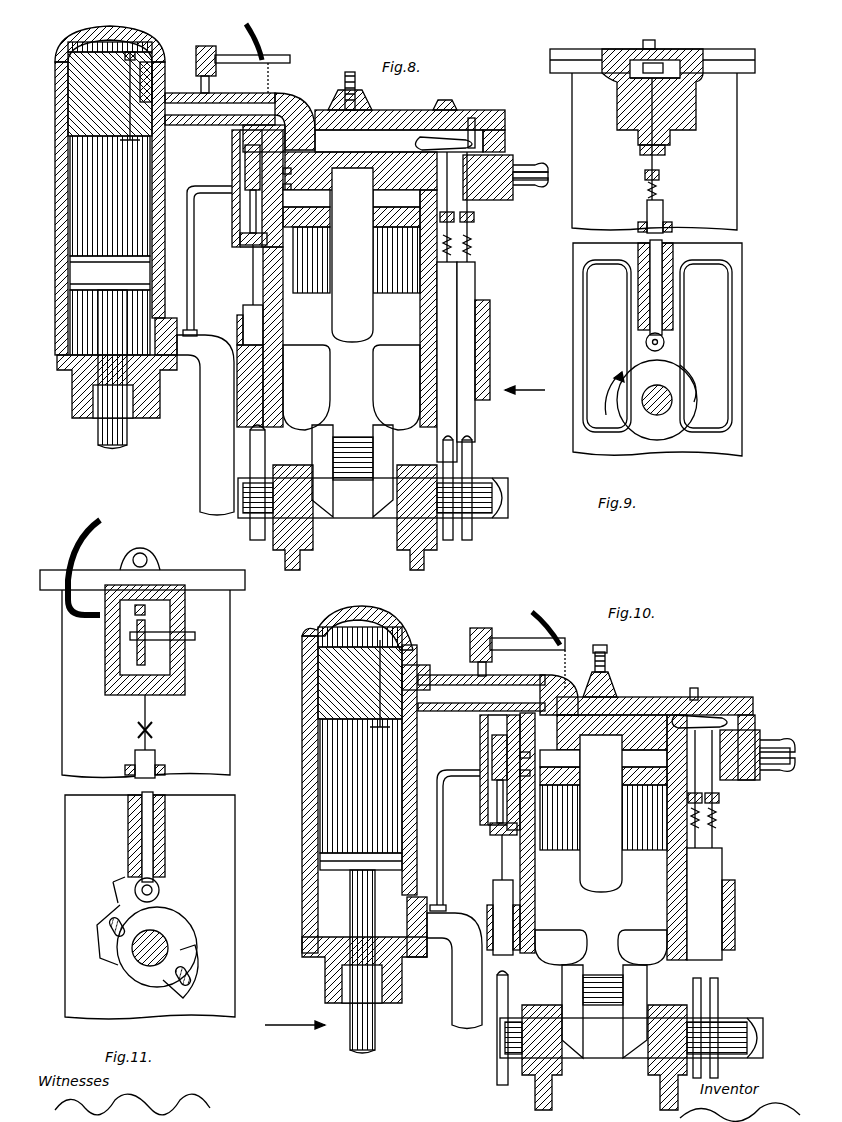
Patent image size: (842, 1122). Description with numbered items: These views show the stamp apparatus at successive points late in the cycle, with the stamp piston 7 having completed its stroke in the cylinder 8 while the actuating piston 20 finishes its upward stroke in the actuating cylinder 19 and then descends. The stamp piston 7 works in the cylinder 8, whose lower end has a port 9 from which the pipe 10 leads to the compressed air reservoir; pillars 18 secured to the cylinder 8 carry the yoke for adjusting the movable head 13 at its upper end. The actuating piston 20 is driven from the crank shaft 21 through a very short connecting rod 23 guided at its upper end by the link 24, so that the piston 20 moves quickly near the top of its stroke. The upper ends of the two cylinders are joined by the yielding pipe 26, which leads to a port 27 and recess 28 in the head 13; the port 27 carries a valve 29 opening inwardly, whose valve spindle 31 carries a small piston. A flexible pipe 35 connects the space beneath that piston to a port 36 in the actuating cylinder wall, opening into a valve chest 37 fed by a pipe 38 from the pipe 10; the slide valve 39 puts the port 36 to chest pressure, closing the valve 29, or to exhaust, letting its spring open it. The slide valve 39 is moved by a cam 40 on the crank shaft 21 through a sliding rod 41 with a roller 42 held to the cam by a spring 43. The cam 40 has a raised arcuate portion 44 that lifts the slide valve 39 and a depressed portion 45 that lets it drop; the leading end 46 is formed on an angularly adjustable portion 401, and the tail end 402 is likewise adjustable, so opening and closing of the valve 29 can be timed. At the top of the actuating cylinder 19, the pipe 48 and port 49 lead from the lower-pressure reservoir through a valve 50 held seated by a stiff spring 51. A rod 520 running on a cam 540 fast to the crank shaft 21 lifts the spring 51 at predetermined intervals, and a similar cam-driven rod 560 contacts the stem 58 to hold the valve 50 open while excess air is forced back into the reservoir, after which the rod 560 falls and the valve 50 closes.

In FIG. 8, the stamp piston 7 is at (70, 268).
In FIG. 10, the stamp piston 7 is at (322, 862).
In FIG. 10, the cylinder 8 is at (302, 793).
In FIG. 8, the port 9 is at (156, 330).
In FIG. 10, the port 9 is at (406, 922).
In FIG. 8, the pipe 10 is at (202, 408).
In FIG. 10, the pipe 10 is at (455, 955).
In FIG. 8, the movable head 13 is at (70, 83).
In FIG. 10, the movable head 13 is at (358, 722).
In FIG. 8, the pillars 18 is at (56, 312).
In FIG. 10, the pillars 18 is at (304, 900).
In FIG. 8, the actuating cylinder 19 is at (392, 115).
In FIG. 9, the actuating cylinder 19 is at (654, 151).
In FIG. 10, the actuating cylinder 19 is at (655, 695).
In FIG. 8, the actuating piston 20 is at (384, 160).
In FIG. 10, the actuating piston 20 is at (603, 750).
In FIG. 8, the crank shaft 21 is at (322, 515).
In FIG. 10, the crank shaft 21 is at (631, 1057).
In FIG. 8, the connecting rod 23 is at (332, 440).
In FIG. 10, the connecting rod 23 is at (604, 1011).
In FIG. 8, the link 24 is at (210, 128).
In FIG. 10, the link 24 is at (458, 712).
In FIG. 8, the pipe 26 is at (240, 140).
In FIG. 10, the pipe 26 is at (470, 703).
In FIG. 8, the port 27 is at (122, 130).
In FIG. 8, the recess 28 is at (152, 66).
In FIG. 11, the recess 28 is at (113, 882).
In FIG. 10, the recess 28 is at (408, 672).
In FIG. 8, the valve 29 is at (128, 146).
In FIG. 10, the valve 29 is at (384, 735).
In FIG. 8, the valve spindle 31 is at (70, 58).
In FIG. 10, the valve spindle 31 is at (398, 630).
In FIG. 8, the flexible pipe 35 is at (258, 50).
In FIG. 11, the flexible pipe 35 is at (98, 528).
In FIG. 10, the flexible pipe 35 is at (542, 636).
In FIG. 8, the port 36 is at (232, 168).
In FIG. 11, the port 36 is at (112, 646).
In FIG. 10, the port 36 is at (480, 748).
In FIG. 8, the valve chest 37 is at (240, 238).
In FIG. 11, the valve chest 37 is at (110, 680).
In FIG. 10, the valve chest 37 is at (490, 815).
In FIG. 8, the pipe 38 is at (218, 287).
In FIG. 10, the pipe 38 is at (444, 870).
In FIG. 8, the slide valve 39 is at (236, 200).
In FIG. 11, the slide valve 39 is at (170, 626).
In FIG. 10, the slide valve 39 is at (492, 783).
In FIG. 8, the cam 40 is at (286, 200).
In FIG. 11, the cam 40 is at (185, 656).
In FIG. 10, the cam 40 is at (580, 758).
In FIG. 8, the sliding rod 41 is at (242, 310).
In FIG. 11, the sliding rod 41 is at (160, 760).
In FIG. 10, the sliding rod 41 is at (493, 896).
In FIG. 11, the roller 42 is at (160, 893).
In FIG. 11, the spring 43 is at (160, 728).
In FIG. 11, the raised arcuate portion 44 is at (192, 922).
In FIG. 11, the depressed portion 45 is at (142, 980).
In FIG. 11, the leading end 46 is at (106, 960).
In FIG. 8, the pipe 48 is at (528, 185).
In FIG. 10, the pipe 48 is at (766, 778).
In FIG. 9, the port 49 is at (684, 104).
In FIG. 8, the valve 50 is at (492, 112).
In FIG. 9, the valve 50 is at (616, 94).
In FIG. 10, the valve 50 is at (752, 700).
In FIG. 8, the spring 51 is at (418, 140).
In FIG. 9, the spring 51 is at (674, 56).
In FIG. 10, the spring 51 is at (688, 695).
In FIG. 8, the stem 58 is at (500, 150).
In FIG. 9, the stem 58 is at (620, 130).
In FIG. 10, the stem 58 is at (740, 728).
In FIG. 11, the adjustable cam portion 401 is at (110, 924).
In FIG. 11, the tail end 402 is at (196, 978).
In FIG. 8, the rod 520 is at (437, 318).
In FIG. 10, the rod 520 is at (687, 886).
In FIG. 8, the cam 540 is at (446, 540).
In FIG. 9, the cam 540 is at (636, 372).
In FIG. 10, the cam 540 is at (740, 1080).
In FIG. 8, the rod 560 is at (480, 274).
In FIG. 9, the rod 560 is at (647, 208).
In FIG. 10, the rod 560 is at (724, 864).
In FIG. 8, the plunger x is at (351, 255).
In FIG. 10, the plunger x is at (603, 813).